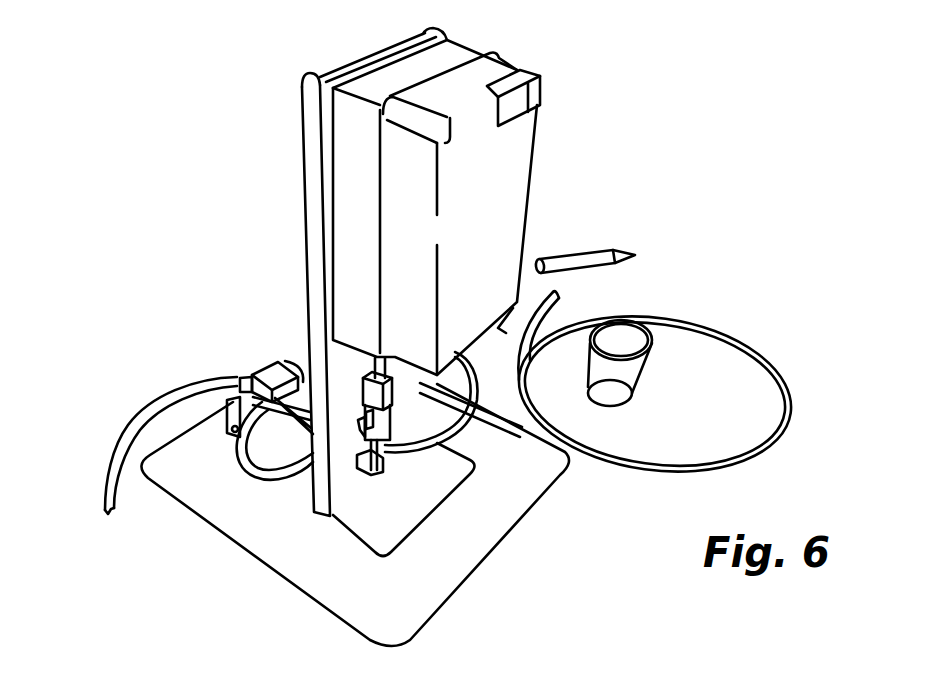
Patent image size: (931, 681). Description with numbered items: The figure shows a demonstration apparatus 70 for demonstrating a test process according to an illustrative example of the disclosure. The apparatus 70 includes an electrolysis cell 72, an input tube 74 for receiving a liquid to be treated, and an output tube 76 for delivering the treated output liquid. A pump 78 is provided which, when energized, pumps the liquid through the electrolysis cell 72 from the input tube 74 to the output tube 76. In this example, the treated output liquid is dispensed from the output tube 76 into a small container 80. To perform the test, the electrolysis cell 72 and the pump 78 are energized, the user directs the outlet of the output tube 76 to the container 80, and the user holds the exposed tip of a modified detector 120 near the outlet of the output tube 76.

The apparatus 70 is at (268, 164).
The electrolysis cell 72 is at (468, 65).
The input tube 74 is at (107, 478).
The output tube 76 is at (687, 323).
The pump 78 is at (298, 353).
The small container 80 is at (640, 397).
The modified detector 120 is at (601, 250).